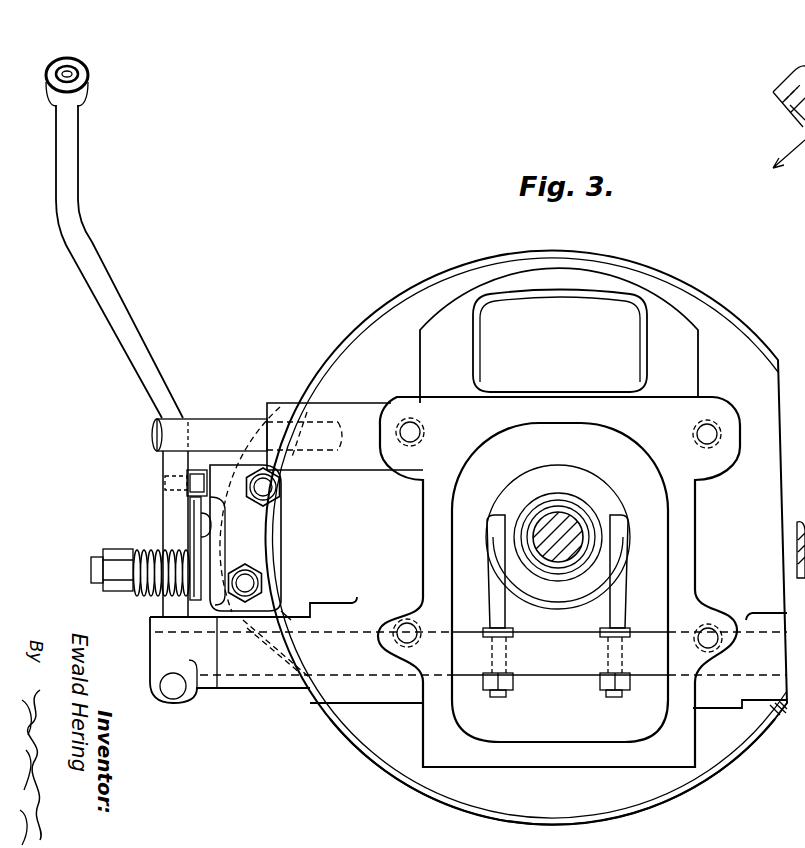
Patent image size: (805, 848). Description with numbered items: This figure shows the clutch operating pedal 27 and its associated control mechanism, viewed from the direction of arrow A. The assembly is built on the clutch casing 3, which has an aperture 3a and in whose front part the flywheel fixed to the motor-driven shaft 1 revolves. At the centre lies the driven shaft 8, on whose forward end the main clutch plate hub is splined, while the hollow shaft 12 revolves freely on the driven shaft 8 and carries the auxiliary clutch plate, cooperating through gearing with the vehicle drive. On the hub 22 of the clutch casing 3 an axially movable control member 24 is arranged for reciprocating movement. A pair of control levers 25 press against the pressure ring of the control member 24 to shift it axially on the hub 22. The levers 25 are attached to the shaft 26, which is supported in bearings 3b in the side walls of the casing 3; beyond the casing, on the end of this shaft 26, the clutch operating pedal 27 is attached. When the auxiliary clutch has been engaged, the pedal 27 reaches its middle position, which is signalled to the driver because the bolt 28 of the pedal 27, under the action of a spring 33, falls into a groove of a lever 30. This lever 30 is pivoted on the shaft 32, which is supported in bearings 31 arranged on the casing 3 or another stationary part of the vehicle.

The shaft 1 is at (798, 520).
The clutch casing 3 is at (770, 397).
The aperture 3a is at (575, 307).
The bearings 3b is at (341, 697).
The driven shaft 8 is at (574, 530).
The hollow shaft 12 is at (540, 515).
The hub 22 is at (547, 502).
The control member 24 is at (573, 486).
The control levers 25 is at (497, 592).
The shaft 26 is at (163, 655).
The clutch operating pedal 27 is at (138, 333).
The bolt 28 is at (165, 482).
The lever 30 is at (193, 532).
The bearings 31 is at (207, 564).
The shaft 32 is at (92, 570).
The spring 33 is at (146, 598).